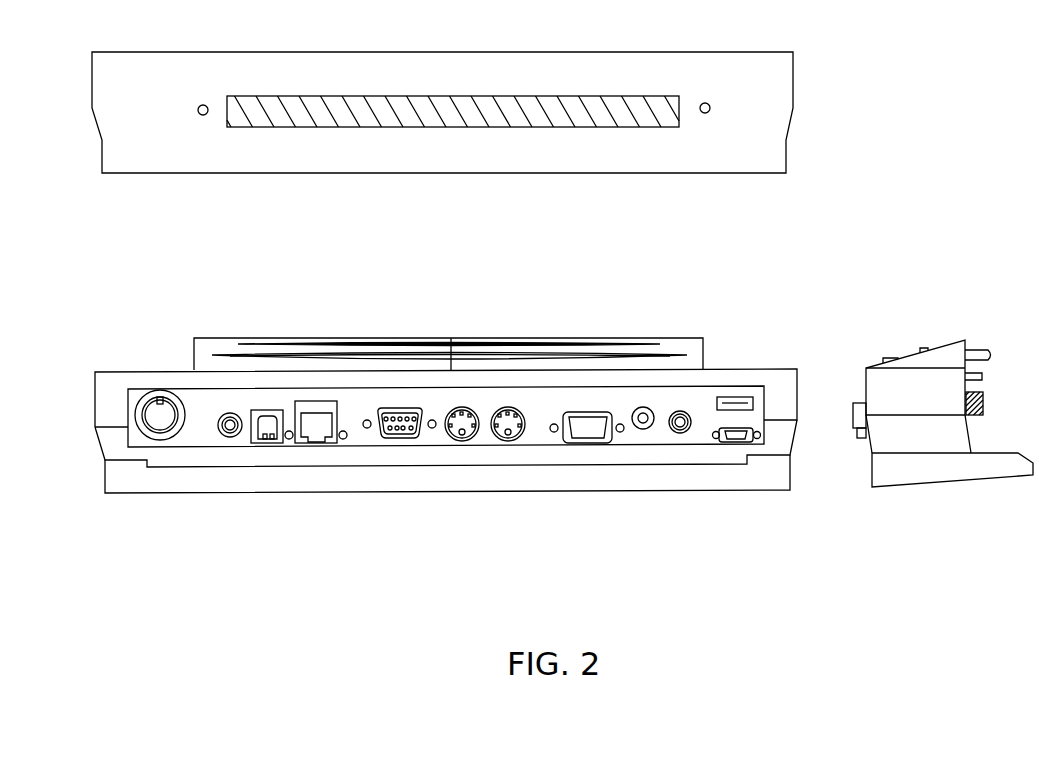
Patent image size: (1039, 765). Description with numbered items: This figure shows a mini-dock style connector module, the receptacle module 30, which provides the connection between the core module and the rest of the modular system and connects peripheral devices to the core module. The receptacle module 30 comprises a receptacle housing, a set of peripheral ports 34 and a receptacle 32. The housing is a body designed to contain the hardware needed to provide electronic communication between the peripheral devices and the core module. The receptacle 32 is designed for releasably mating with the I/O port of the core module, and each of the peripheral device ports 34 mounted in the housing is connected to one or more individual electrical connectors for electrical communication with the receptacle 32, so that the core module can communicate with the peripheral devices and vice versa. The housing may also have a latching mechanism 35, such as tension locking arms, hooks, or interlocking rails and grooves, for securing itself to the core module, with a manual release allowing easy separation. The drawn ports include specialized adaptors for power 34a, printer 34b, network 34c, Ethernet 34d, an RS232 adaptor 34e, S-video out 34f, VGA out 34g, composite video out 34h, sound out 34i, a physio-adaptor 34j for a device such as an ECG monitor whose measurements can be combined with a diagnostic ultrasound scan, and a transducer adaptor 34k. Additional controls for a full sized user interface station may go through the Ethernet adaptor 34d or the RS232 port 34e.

The receptacle module 30 is at (740, 178).
The receptacle 32 is at (437, 95).
The peripheral ports 34 is at (800, 522).
The power adaptor 34a is at (161, 440).
The printer adaptor 34b is at (230, 437).
The network adaptor 34c is at (267, 443).
The Ethernet adaptor 34d is at (332, 443).
The RS232 adaptor 34e is at (402, 438).
The S-video out 34f is at (465, 440).
The VGA out 34g is at (588, 443).
The composite video out 34h is at (645, 430).
The sound out 34i is at (682, 433).
The physio-adaptor 34j is at (748, 442).
The transducer adaptor 34k is at (753, 401).
The latching mechanism 35 is at (203, 104).